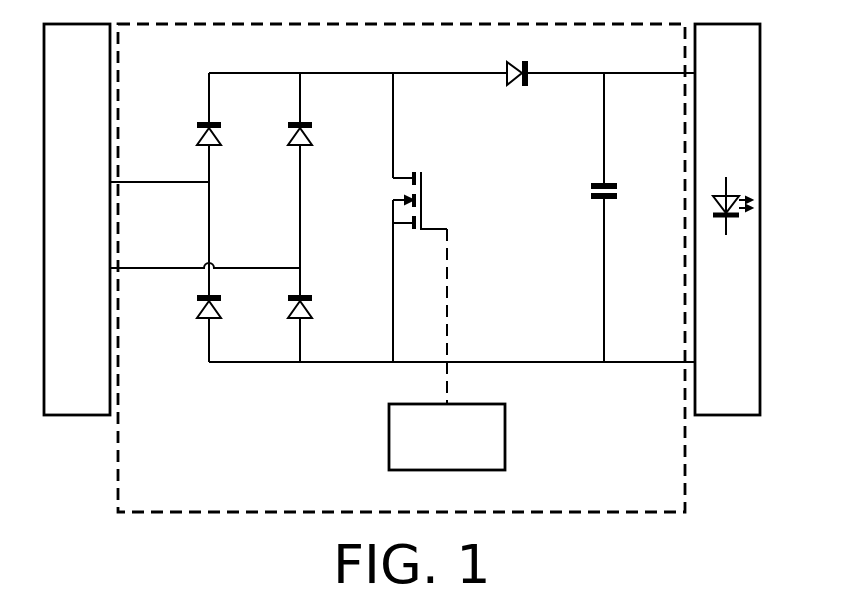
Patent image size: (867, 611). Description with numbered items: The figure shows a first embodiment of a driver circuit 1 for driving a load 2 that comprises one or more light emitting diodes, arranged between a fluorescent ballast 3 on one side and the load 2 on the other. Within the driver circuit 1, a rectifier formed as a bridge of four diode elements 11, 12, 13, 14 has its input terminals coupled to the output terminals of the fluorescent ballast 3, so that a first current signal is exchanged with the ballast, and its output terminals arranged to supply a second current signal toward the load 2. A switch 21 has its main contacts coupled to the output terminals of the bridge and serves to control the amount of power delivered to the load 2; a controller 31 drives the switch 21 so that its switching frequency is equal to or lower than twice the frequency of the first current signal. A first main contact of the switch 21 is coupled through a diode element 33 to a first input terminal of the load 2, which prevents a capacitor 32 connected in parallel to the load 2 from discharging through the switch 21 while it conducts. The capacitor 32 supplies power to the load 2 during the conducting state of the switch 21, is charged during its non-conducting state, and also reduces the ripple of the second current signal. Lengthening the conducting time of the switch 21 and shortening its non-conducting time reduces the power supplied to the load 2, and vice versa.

The driver circuit 1 is at (146, 60).
The load 2 is at (736, 60).
The fluorescent ballast 3 is at (86, 60).
The diode element 11 is at (200, 137).
The diode element 12 is at (200, 311).
The diode element 13 is at (310, 137).
The diode element 14 is at (312, 311).
The switch 21 is at (427, 204).
The controller 31 is at (464, 451).
The capacitor 32 is at (597, 200).
The diode element 33 is at (513, 87).